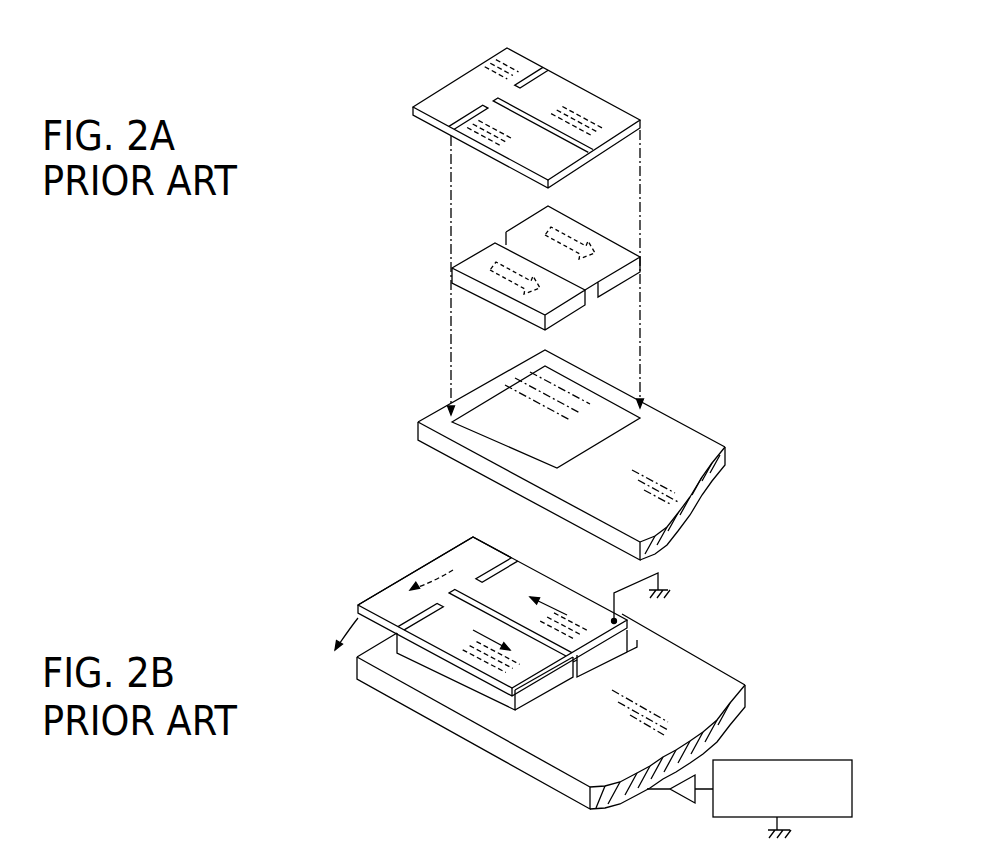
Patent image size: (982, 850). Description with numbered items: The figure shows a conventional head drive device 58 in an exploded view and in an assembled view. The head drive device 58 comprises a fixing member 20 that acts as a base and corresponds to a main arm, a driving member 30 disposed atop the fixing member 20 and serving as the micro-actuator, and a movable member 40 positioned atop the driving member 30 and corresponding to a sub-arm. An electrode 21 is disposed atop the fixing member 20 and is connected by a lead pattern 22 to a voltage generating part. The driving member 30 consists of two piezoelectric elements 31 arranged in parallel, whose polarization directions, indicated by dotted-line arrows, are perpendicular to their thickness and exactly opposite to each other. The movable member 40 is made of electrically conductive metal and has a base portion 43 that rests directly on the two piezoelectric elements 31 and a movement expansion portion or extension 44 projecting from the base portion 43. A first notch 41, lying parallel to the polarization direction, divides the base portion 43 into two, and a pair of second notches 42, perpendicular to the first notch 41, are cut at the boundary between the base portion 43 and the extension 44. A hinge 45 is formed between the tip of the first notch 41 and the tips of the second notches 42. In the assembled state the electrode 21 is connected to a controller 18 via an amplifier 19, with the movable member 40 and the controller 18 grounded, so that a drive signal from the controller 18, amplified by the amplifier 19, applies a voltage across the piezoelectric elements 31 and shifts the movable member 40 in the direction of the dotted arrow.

In FIG. 2B, the controller 18 is at (803, 758).
In FIG. 2B, the amplifier 19 is at (676, 800).
In FIG. 2A, the fixing member 20 is at (584, 455).
In FIG. 2B, the fixing member 20 is at (568, 713).
In FIG. 2A, the electrode 21 is at (507, 438).
In FIG. 2B, the electrode 21 is at (575, 680).
In FIG. 2A, the lead pattern 22 is at (605, 500).
In FIG. 2B, the lead pattern 22 is at (567, 747).
In FIG. 2A, the driving member 30 is at (626, 284).
In FIG. 2B, the driving member 30 is at (532, 692).
In FIG. 2A, the piezoelectric elements 31 is at (643, 260).
In FIG. 2B, the piezoelectric elements 31 is at (485, 695).
In FIG. 2A, the movable member 40 is at (593, 103).
In FIG. 2B, the movable member 40 is at (526, 593).
In FIG. 2A, the first notch 41 is at (543, 120).
In FIG. 2B, the first notch 41 is at (505, 608).
In FIG. 2A, the second notches 42 is at (542, 82).
In FIG. 2B, the second notches 42 is at (494, 565).
In FIG. 2A, the base portion 43 is at (608, 117).
In FIG. 2B, the base portion 43 is at (632, 572).
In FIG. 2A, the movement expansion portion (extension) 44 is at (510, 60).
In FIG. 2B, the movement expansion portion (extension) 44 is at (468, 540).
In FIG. 2A, the hinge 45 is at (488, 98).
In FIG. 2B, the hinge 45 is at (440, 602).
In FIG. 2A, the head drive device 58 is at (702, 168).
In FIG. 2B, the head drive device 58 is at (727, 608).